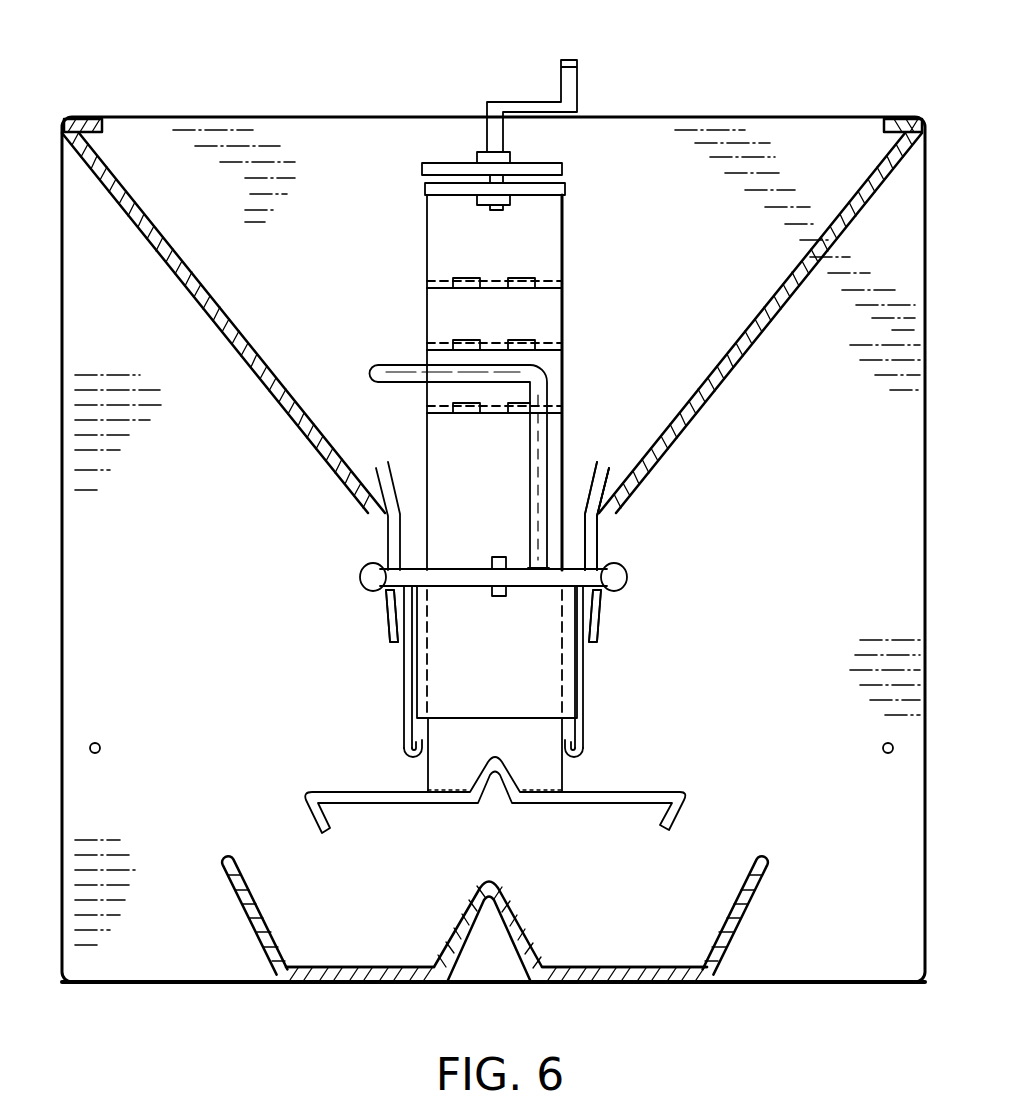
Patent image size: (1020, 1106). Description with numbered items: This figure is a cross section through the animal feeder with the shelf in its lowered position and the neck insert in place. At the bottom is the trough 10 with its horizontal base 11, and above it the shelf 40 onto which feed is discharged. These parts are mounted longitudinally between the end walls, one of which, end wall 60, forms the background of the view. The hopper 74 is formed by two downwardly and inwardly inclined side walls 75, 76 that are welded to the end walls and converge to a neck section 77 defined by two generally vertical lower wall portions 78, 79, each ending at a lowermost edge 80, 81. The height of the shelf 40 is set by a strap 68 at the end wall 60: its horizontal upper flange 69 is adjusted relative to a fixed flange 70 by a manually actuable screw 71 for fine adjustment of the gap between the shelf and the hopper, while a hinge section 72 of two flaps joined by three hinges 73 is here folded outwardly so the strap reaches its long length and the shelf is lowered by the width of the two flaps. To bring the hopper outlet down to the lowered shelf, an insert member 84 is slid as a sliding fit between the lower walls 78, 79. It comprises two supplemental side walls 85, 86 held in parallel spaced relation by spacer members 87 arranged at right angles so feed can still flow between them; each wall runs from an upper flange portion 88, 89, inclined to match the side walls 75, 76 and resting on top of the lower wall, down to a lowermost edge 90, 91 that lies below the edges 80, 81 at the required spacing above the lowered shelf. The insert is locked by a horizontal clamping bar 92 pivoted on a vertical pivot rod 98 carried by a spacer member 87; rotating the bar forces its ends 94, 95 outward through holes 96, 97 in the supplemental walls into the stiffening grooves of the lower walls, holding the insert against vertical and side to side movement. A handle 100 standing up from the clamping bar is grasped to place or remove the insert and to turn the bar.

The trough 10 is at (716, 850).
The horizontal base 11 is at (377, 962).
The shelf 40 is at (372, 808).
The end wall 60 is at (683, 252).
The strap 68 is at (443, 212).
The upper flange 69 is at (567, 180).
The fixed flange 70 is at (440, 160).
The manually actuable screw 71 is at (588, 68).
The hinge section 72 is at (540, 322).
The hinges 73 is at (528, 276).
The hopper 74 is at (755, 138).
The inclined side wall 75 is at (205, 296).
The inclined side wall 76 is at (768, 320).
The neck section 77 is at (628, 546).
The lower wall portion 78 is at (386, 606).
The lower wall portion 79 is at (616, 610).
The lowermost edge 80 is at (392, 645).
The lowermost edge 81 is at (600, 648).
The insert member 84 is at (588, 490).
The supplemental side wall 85 is at (402, 682).
The supplemental side wall 86 is at (590, 694).
The spacer member 87 is at (492, 684).
The upper flange portion 88 is at (378, 475).
The upper flange portion 89 is at (625, 468).
The lowermost edge 90 is at (404, 750).
The lowermost edge 91 is at (584, 750).
The clamping bar 92 is at (462, 600).
The clamping bar end 94 is at (378, 566).
The clamping bar end 95 is at (630, 585).
The hole 96 is at (414, 578).
The hole 97 is at (568, 596).
The vertical pivot rod 98 is at (499, 556).
The handle 100 is at (402, 362).